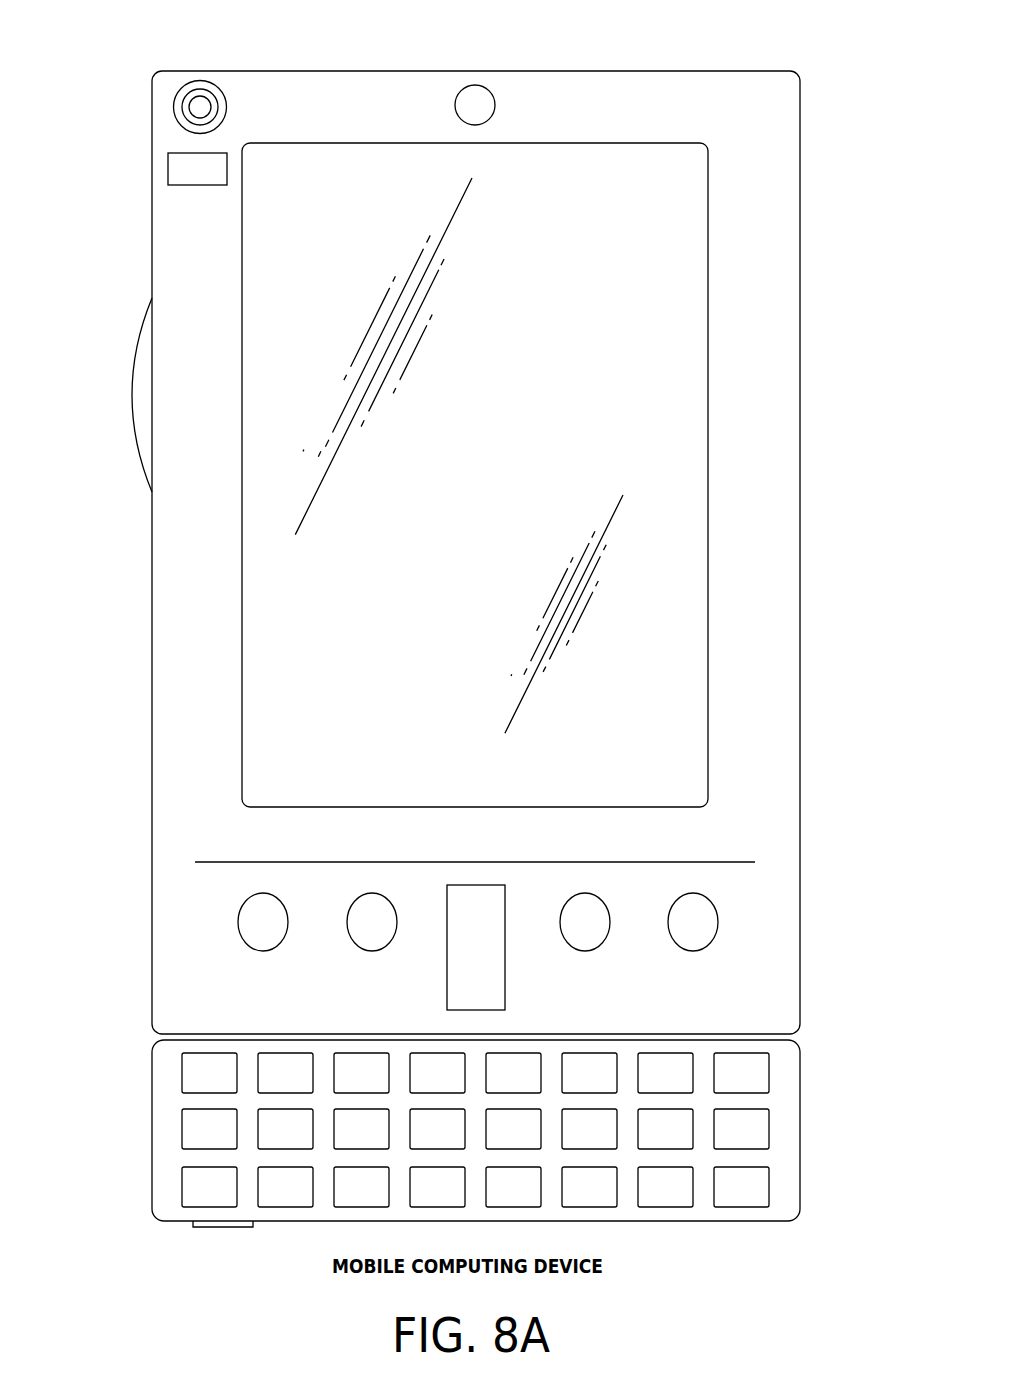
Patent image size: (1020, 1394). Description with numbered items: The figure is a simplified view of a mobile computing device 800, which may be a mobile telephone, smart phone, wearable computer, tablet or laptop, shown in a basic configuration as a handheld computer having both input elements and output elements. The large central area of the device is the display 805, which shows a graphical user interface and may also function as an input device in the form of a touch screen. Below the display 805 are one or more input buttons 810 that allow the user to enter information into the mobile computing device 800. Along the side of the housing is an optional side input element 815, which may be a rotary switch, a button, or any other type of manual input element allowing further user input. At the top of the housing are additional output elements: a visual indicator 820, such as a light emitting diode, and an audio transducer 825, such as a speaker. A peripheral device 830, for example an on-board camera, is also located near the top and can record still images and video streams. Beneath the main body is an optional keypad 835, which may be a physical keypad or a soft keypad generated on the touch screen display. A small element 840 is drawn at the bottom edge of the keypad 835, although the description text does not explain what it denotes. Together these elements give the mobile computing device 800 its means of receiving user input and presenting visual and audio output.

The mobile computing device 800 is at (765, 72).
The display 805 is at (265, 645).
The input buttons 810 is at (263, 951).
The side input element 815 is at (131, 397).
The visual indicator 820 is at (168, 170).
The audio transducer 825 is at (174, 109).
The peripheral device 830 is at (475, 85).
The keypad 835 is at (166, 1129).
The slide connector 840 is at (200, 1227).